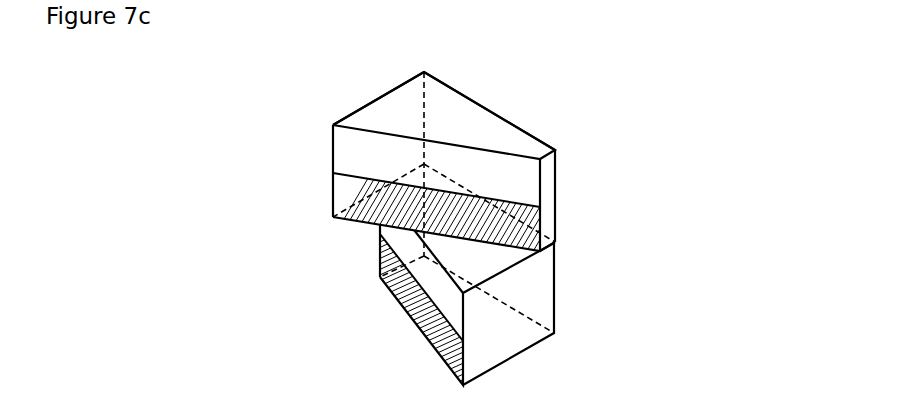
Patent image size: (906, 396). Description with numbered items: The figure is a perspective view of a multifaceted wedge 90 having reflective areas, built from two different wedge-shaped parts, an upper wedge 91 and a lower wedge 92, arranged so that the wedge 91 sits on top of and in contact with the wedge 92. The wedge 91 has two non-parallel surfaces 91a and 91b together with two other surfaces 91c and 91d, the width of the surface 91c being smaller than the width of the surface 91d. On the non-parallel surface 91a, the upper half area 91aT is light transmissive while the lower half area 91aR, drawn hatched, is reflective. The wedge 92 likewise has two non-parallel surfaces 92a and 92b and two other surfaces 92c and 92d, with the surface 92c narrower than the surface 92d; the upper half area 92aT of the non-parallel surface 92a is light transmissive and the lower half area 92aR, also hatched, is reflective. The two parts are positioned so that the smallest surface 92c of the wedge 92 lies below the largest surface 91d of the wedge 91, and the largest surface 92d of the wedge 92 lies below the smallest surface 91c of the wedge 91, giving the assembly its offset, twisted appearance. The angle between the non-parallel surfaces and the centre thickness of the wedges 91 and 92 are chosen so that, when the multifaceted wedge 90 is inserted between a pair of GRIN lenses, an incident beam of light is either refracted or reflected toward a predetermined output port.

The multifaceted wedge 90 is at (459, 213).
The wedge 91 is at (413, 145).
The non-parallel surface 91a is at (207, 152).
The upper half area 91aT is at (332, 152).
The lower half area 91aR is at (332, 197).
The non-parallel surface 91b is at (463, 133).
The surface 91c is at (544, 192).
The surface 91d is at (386, 125).
The wedge 92 is at (440, 280).
The non-parallel surface 92a is at (262, 254).
The upper half area 92aT is at (380, 257).
The lower half area 92aR is at (386, 289).
The non-parallel surface 92b is at (525, 282).
The surface 92c is at (407, 233).
The surface 92d is at (500, 340).